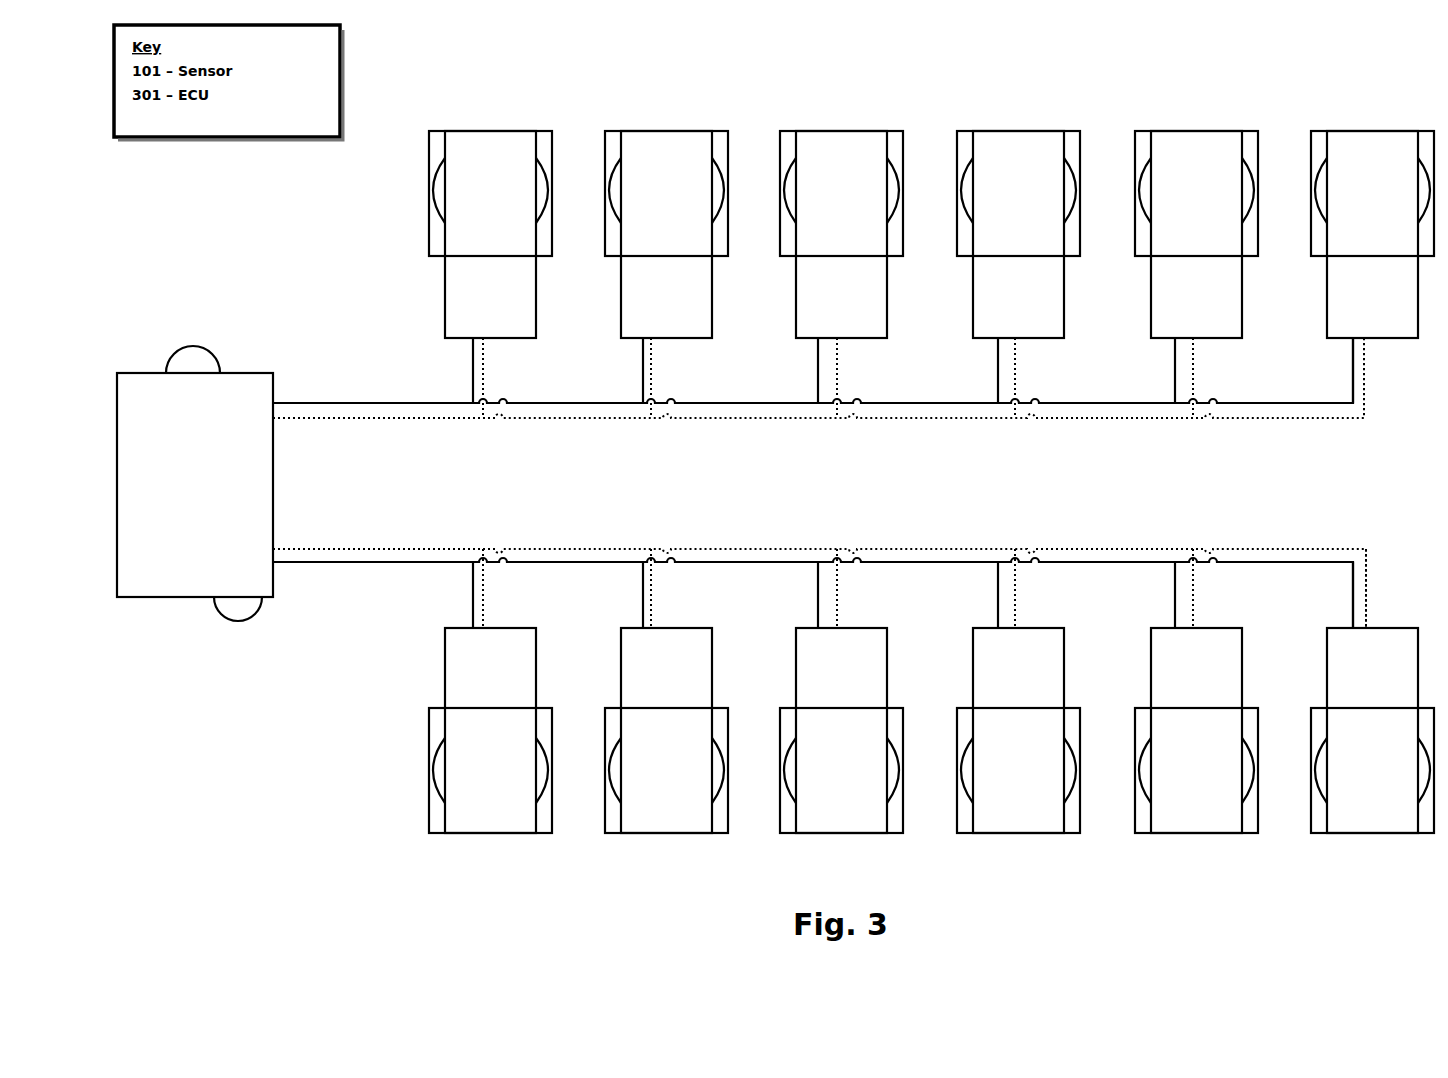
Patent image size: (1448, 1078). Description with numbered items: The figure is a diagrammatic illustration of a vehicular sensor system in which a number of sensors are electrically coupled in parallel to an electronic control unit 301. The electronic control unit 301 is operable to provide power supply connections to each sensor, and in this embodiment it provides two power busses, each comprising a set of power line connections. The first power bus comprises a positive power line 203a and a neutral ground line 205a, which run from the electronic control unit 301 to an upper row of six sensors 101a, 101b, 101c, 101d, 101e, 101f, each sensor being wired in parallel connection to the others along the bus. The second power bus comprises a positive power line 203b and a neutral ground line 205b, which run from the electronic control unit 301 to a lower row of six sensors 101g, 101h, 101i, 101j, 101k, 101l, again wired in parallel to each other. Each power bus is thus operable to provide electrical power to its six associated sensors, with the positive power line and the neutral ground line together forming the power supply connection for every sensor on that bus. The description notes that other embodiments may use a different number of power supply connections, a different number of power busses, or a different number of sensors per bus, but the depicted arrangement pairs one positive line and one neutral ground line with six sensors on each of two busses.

The sensor 101a is at (468, 200).
The sensor 101b is at (644, 200).
The sensor 101c is at (819, 200).
The sensor 101d is at (996, 197).
The sensor 101e is at (1174, 200).
The sensor 101f is at (1352, 198).
The sensor 101g is at (468, 790).
The sensor 101h is at (644, 790).
The sensor 101i is at (821, 793).
The sensor 101j is at (998, 793).
The sensor 101k is at (1174, 793).
The sensor 101l is at (1353, 790).
The electronic control unit 301 is at (177, 497).
The positive power line 203a is at (338, 402).
The neutral ground line 205a is at (405, 418).
The positive power line 203b is at (320, 563).
The neutral ground line 205b is at (382, 549).